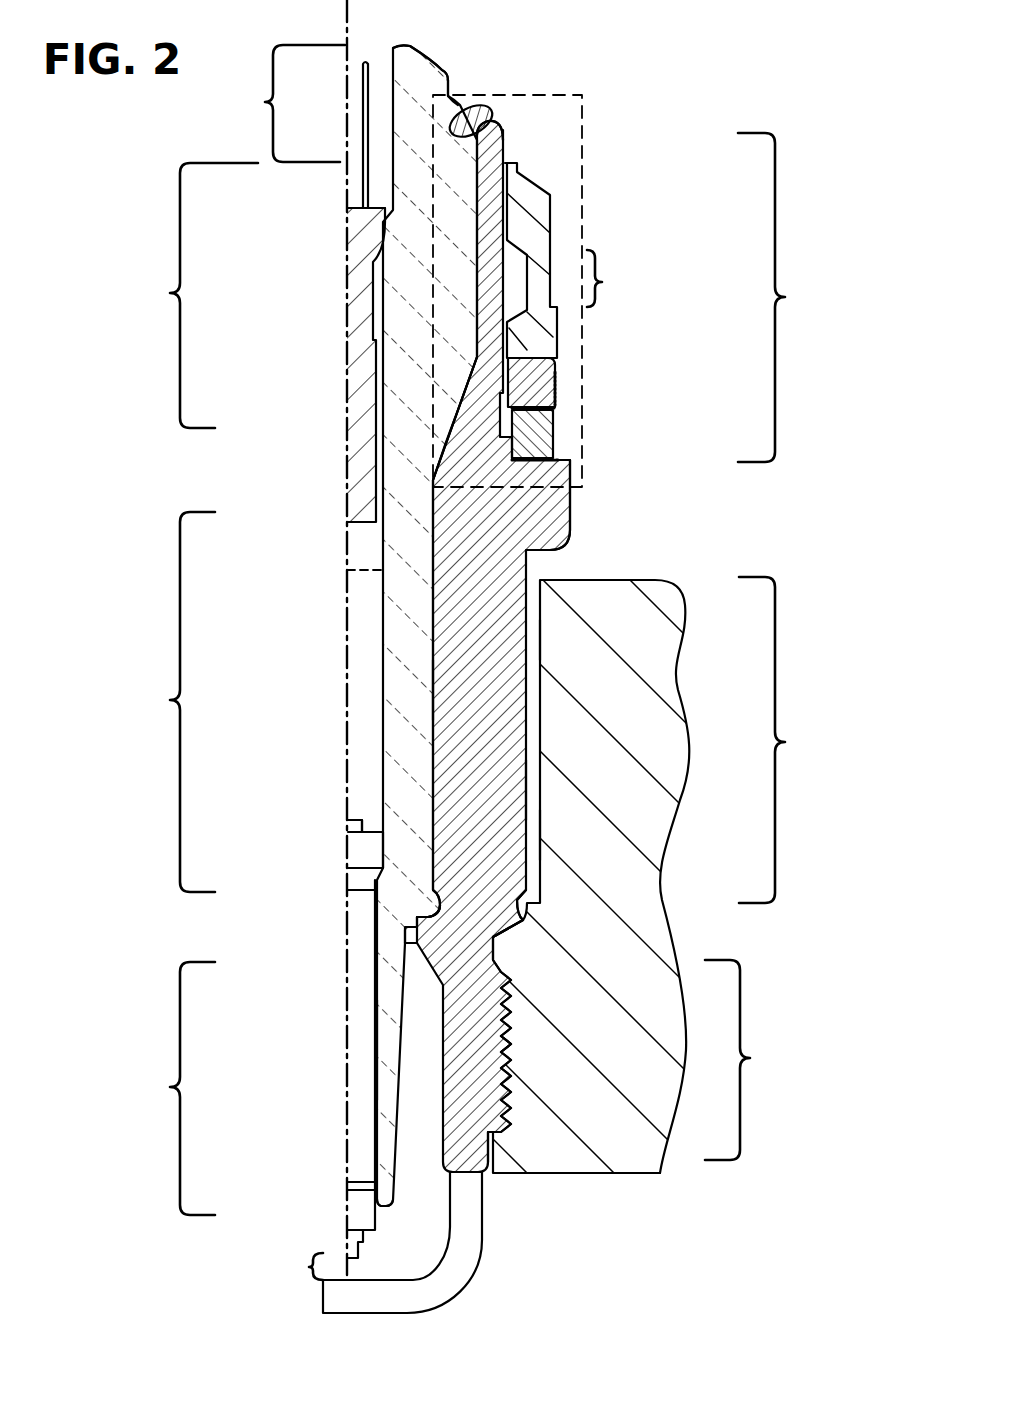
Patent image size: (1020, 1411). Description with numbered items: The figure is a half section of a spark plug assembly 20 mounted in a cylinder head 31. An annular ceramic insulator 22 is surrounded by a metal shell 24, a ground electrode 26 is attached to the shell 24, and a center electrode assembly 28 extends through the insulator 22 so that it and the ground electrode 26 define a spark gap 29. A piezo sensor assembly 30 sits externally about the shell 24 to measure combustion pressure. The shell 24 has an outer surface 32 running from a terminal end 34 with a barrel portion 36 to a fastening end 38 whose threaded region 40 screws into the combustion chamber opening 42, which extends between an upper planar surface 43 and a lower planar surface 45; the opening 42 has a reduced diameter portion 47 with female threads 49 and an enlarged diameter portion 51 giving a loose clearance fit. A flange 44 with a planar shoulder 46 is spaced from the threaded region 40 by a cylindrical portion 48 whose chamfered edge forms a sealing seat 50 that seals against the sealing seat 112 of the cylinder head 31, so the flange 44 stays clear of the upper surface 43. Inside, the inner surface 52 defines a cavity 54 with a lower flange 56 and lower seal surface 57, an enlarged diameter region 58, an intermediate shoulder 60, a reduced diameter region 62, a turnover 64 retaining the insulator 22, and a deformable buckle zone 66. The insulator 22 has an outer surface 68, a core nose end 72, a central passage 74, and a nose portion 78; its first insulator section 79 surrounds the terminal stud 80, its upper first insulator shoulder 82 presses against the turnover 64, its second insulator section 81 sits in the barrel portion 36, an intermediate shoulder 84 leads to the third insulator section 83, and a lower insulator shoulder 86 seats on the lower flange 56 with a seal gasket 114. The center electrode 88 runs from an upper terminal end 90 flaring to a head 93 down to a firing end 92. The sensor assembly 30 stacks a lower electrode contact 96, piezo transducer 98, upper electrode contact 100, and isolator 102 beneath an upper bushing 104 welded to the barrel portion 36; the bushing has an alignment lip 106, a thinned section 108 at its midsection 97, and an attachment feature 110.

The spark plug assembly 20 is at (700, 65).
The ceramic insulator 22 is at (407, 572).
The shell 24 is at (505, 270).
The ground electrode 26 is at (484, 1205).
The center electrode assembly 28 is at (340, 305).
The spark gap 29 is at (295, 1267).
The sensor assembly 30 is at (588, 128).
The cylinder head 31 is at (570, 643).
The outer surface 32 is at (528, 790).
The terminal end 34 is at (494, 117).
The barrel portion 36 is at (801, 297).
The fastening end 38 is at (490, 1160).
The threaded region 40 is at (768, 1060).
The combustion chamber opening 42 is at (540, 830).
The upper planar surface 43 is at (510, 851).
The flange 44 is at (577, 518).
The lower planar surface 45 is at (640, 1175).
The shoulder 46 is at (556, 462).
The reduced diameter portion 47 is at (768, 1060).
The cylindrical portion 48 is at (510, 875).
The female threads 49 is at (511, 1050).
The sealing seat 50 is at (525, 918).
The enlarged diameter portion 51 is at (510, 875).
The inner surface 52 is at (430, 690).
The cavity 54 is at (418, 72).
The lower flange 56 is at (408, 945).
The lower seal surface 57 is at (416, 933).
The enlarged diameter region 58 is at (801, 297).
The shoulder 60 is at (450, 470).
The reduced diameter region 62 is at (615, 580).
The turnover 64 is at (462, 116).
The buckle zone 66 is at (470, 415).
The outer surface 68 is at (452, 101).
The core nose end 72 is at (393, 1188).
The central passage 74 is at (367, 150).
The nose portion 78 is at (172, 1088).
The first insulator section 79 is at (284, 103).
The terminal stud 80 is at (347, 320).
The second insulator section 81 is at (194, 295).
The upper first insulator shoulder 82 is at (494, 122).
The third insulator section 83 is at (172, 702).
The intermediate shoulder 84 is at (458, 443).
The lower insulator shoulder 86 is at (438, 910).
The center electrode 88 is at (357, 1050).
The upper terminal end 90 is at (357, 822).
The firing end 92 is at (358, 1260).
The head 93 is at (358, 850).
The lower electrode contact 96 is at (554, 436).
The midsection 97 is at (604, 282).
The piezo transducer 98 is at (555, 408).
The upper electrode contact 100 is at (552, 383).
The isolator 102 is at (557, 368).
The upper bushing 104 is at (599, 245).
The alignment lip 106 is at (506, 152).
The thinned section 108 is at (589, 245).
The spark plug attachment feature 110 is at (599, 245).
The sealing seat 112 is at (523, 885).
The seal gasket 114 is at (427, 924).